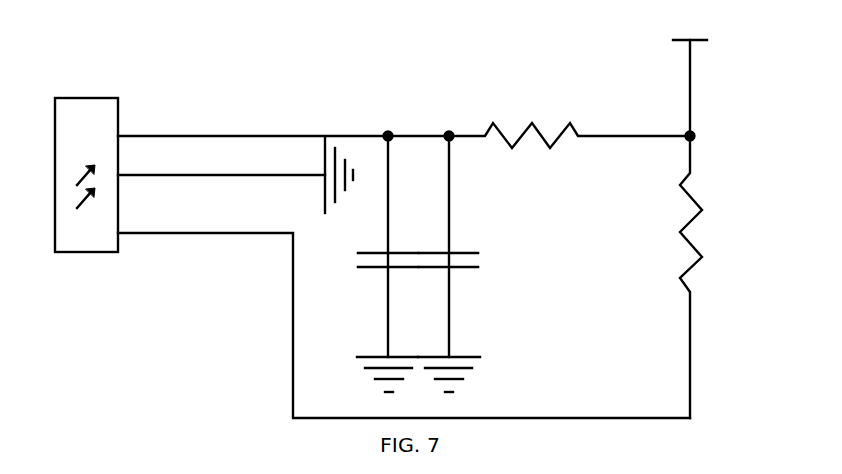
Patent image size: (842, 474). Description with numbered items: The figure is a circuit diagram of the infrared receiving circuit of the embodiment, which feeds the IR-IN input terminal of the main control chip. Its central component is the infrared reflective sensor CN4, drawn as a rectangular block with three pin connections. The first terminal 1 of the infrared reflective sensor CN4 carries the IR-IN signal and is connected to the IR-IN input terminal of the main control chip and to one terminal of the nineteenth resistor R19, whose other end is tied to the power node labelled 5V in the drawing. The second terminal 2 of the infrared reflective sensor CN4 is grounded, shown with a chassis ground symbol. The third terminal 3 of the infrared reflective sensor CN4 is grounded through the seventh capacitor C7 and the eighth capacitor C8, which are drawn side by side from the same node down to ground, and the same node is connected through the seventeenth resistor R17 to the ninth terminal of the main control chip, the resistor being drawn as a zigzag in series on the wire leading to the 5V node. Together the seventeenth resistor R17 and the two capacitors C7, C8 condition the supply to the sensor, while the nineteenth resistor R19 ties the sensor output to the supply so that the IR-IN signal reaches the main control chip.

The infrared reflective sensor CN4 is at (91, 184).
The first terminal of the infrared reflective sensor 1 is at (404, 300).
The second terminal of the infrared reflective sensor 2 is at (221, 159).
The third terminal of the infrared reflective sensor 3 is at (253, 122).
The seventh capacitor C7 is at (397, 261).
The eighth capacitor C8 is at (467, 261).
The seventeenth resistor R17 is at (539, 136).
The nineteenth resistor R19 is at (728, 277).
The 5V power supply 5V is at (691, 72).